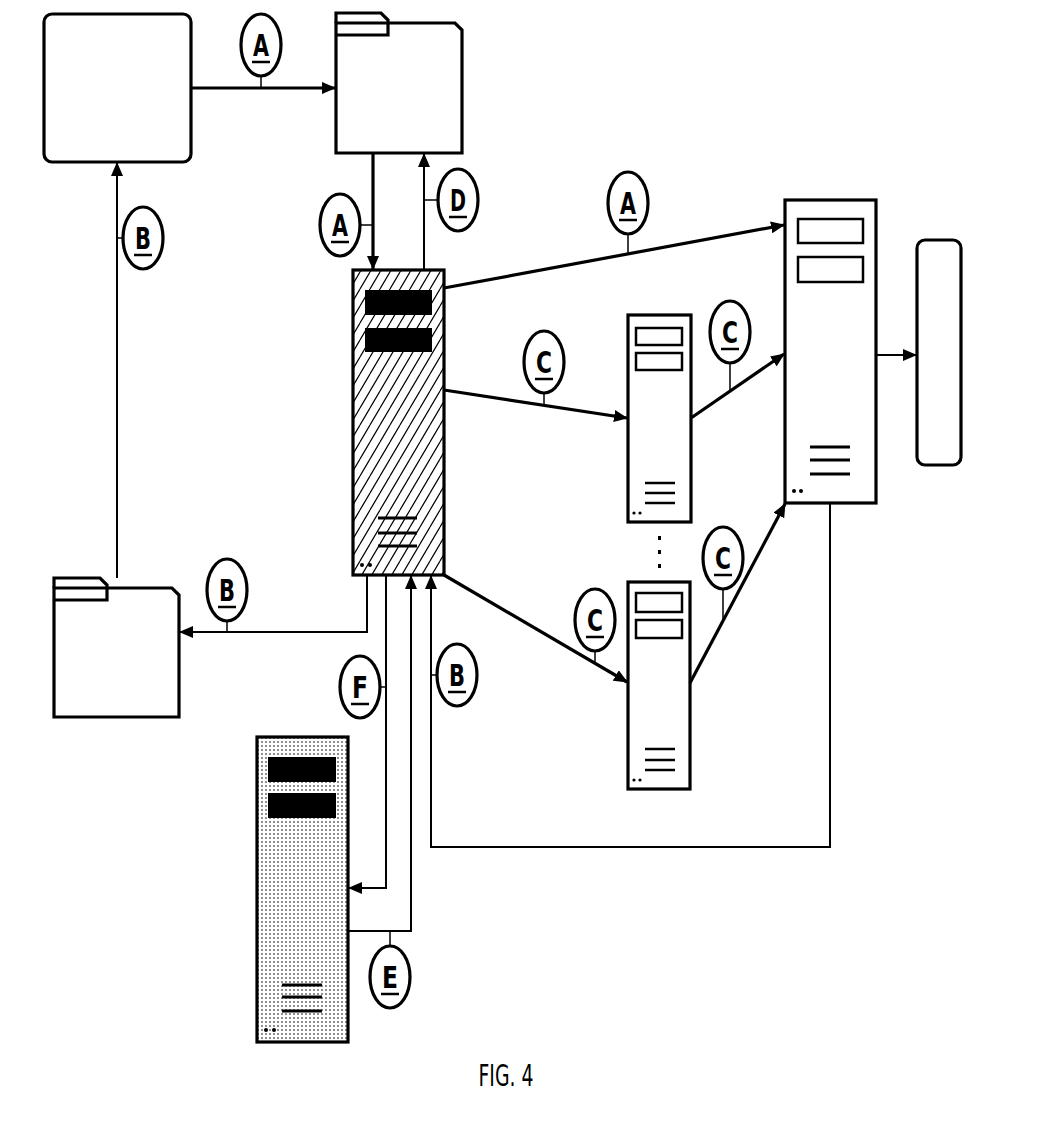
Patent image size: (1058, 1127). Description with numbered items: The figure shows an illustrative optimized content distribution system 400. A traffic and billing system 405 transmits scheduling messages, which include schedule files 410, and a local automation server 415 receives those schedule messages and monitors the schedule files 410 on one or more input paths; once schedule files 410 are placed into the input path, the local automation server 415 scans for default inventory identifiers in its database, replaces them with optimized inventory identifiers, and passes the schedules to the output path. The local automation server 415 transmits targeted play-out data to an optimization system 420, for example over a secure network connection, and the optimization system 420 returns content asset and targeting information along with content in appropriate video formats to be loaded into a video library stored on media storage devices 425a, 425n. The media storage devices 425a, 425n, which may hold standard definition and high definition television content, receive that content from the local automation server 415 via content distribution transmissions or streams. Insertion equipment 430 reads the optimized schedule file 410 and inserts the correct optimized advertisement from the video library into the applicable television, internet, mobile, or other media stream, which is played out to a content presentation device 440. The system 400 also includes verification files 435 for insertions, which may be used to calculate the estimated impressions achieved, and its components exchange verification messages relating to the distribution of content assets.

The optimized content distribution system 400 is at (572, 88).
The traffic and billing system 405 is at (103, 101).
The schedule files 410 is at (385, 101).
The local automation server 415 is at (388, 452).
The optimization system 420 is at (286, 909).
The media storage device 425a is at (641, 441).
The media storage device 425n is at (641, 703).
The insertion equipment 430 is at (816, 373).
The verification files 435 is at (103, 668).
The content presentation device 440 is at (924, 365).